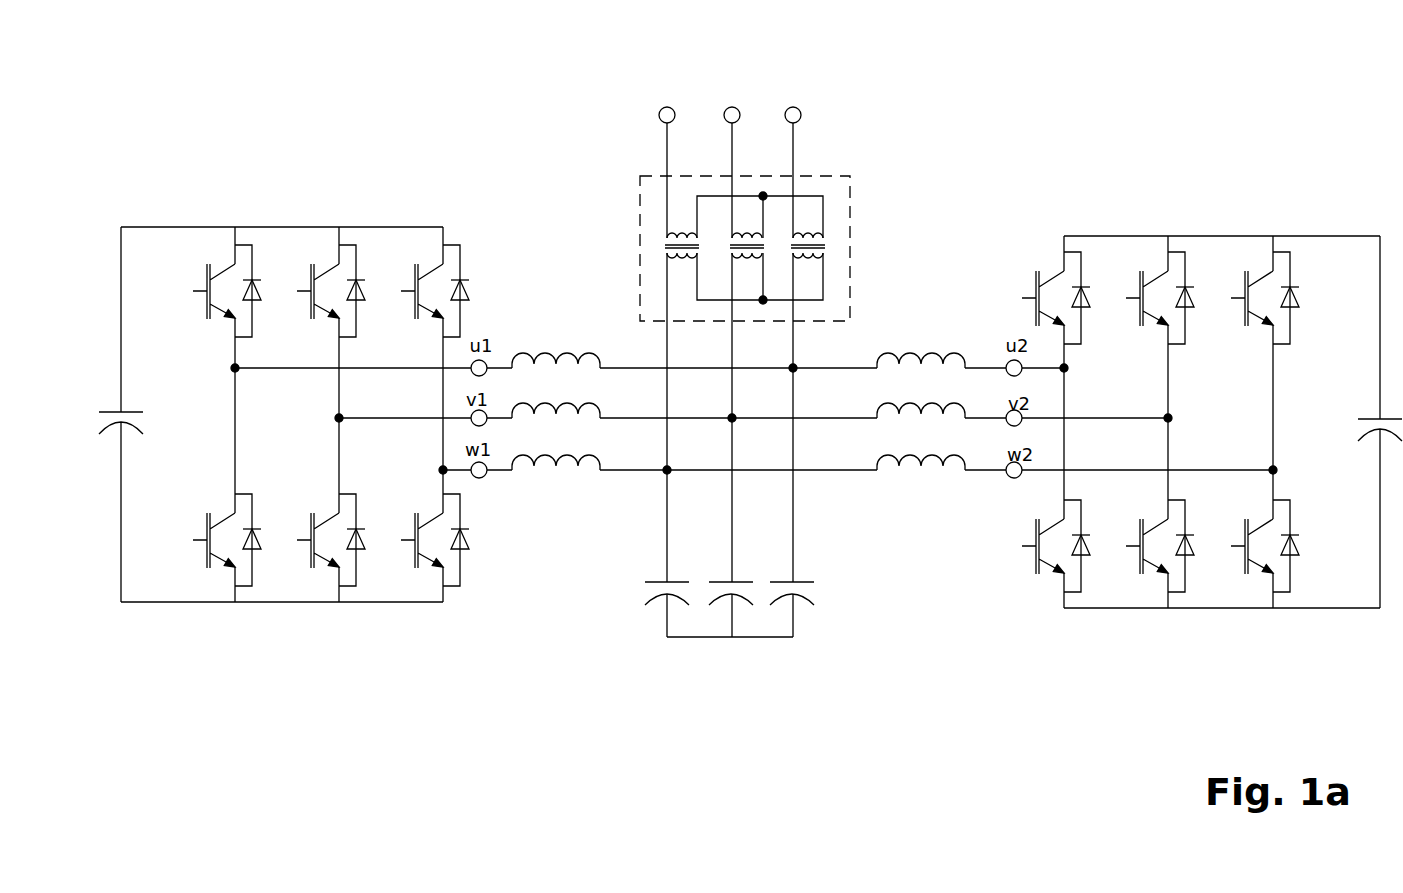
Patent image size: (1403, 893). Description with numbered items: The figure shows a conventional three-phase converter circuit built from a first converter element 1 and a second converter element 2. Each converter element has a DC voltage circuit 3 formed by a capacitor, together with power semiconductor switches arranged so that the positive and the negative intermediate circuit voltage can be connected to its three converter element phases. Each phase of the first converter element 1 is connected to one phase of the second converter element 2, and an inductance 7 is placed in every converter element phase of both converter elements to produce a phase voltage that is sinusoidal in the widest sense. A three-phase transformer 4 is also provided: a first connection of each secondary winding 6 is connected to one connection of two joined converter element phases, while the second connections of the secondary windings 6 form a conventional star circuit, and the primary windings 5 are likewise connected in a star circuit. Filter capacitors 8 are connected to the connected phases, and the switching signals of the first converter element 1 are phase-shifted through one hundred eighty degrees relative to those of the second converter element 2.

The first converter element 1 is at (288, 253).
The second converter element 2 is at (1228, 257).
The DC voltage circuit 3 is at (139, 387).
The transformer 4 is at (828, 176).
The primary winding 5 is at (810, 235).
The secondary winding 6 is at (823, 257).
The inductance 7 is at (960, 410).
The filter capacitor 8 is at (807, 595).